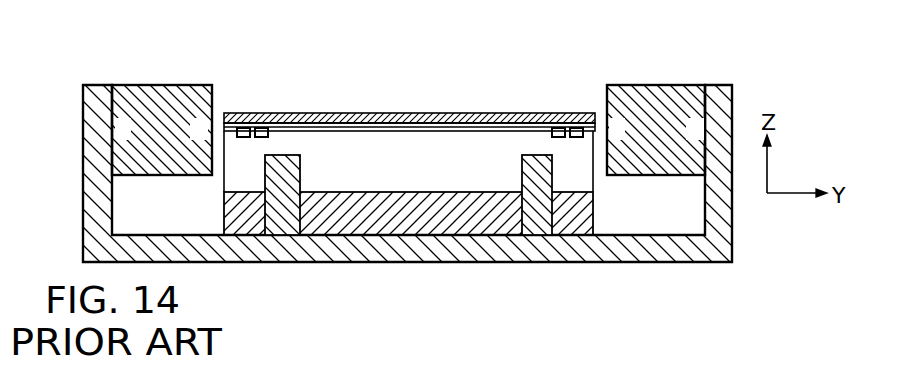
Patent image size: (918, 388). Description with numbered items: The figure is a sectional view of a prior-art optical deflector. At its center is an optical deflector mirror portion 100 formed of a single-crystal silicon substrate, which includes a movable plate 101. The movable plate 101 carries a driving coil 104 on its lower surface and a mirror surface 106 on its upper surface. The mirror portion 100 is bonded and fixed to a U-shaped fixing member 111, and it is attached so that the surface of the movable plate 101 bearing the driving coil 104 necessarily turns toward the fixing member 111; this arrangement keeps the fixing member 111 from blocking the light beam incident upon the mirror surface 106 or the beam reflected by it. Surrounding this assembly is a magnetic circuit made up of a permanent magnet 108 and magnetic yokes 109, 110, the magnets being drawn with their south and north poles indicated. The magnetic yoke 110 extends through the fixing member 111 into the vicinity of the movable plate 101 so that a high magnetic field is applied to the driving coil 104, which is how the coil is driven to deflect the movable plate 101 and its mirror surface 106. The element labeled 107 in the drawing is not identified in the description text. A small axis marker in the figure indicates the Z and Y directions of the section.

The optical deflector mirror portion 100 is at (447, 83).
The movable plate 101 is at (410, 113).
The driving coil 104 is at (243, 113).
The mirror surface 106 is at (312, 113).
The support frame 107 is at (340, 131).
The permanent magnet 108 is at (158, 85).
The magnetic yoke 109 is at (667, 253).
The magnetic yoke 110 is at (280, 222).
The fixing member 111 is at (487, 147).